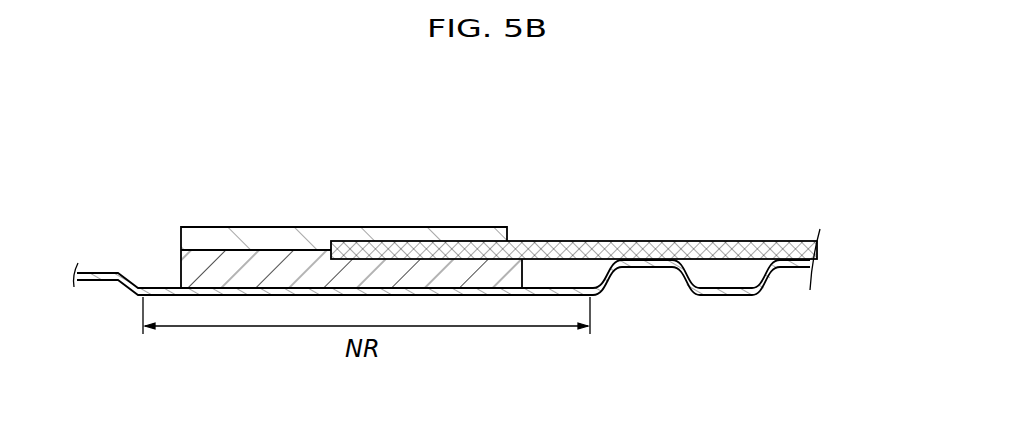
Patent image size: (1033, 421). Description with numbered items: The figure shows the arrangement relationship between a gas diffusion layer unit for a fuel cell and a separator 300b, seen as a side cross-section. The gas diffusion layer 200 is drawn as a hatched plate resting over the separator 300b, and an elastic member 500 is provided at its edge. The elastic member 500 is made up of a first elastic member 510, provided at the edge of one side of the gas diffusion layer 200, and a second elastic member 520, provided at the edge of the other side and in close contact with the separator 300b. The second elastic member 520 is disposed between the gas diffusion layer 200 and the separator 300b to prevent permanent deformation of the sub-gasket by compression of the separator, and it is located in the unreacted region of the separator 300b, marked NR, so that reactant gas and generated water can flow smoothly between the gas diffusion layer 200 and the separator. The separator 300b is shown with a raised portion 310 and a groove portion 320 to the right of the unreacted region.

The gas diffusion layer 200 is at (818, 247).
The separator 300b is at (433, 284).
The protruding portion of support plate 310 is at (650, 263).
The groove portion of support plate 320 is at (729, 274).
The elastic member 500 is at (351, 193).
The first elastic member 510 is at (231, 236).
The second elastic member 520 is at (290, 262).